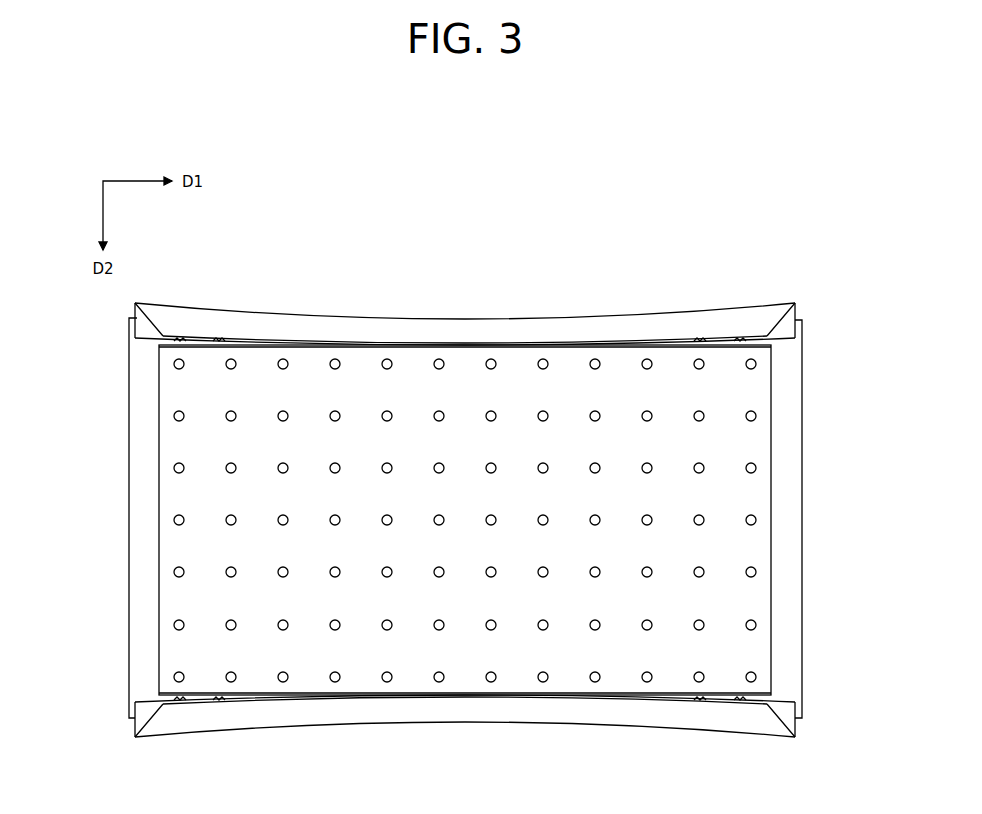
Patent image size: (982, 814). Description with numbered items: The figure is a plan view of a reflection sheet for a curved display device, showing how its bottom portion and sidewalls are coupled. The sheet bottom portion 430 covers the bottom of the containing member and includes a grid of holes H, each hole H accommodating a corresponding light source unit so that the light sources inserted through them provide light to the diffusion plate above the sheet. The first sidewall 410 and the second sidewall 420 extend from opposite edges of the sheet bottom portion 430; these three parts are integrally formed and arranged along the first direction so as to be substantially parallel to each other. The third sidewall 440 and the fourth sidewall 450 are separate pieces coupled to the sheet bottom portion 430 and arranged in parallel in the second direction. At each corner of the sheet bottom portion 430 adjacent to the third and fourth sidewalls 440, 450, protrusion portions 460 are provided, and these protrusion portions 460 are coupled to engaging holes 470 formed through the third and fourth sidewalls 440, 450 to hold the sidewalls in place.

The first sidewall 410 is at (790, 458).
The second sidewall 420 is at (143, 457).
The sheet bottom portion 430 is at (752, 492).
The third sidewall 440 is at (528, 328).
The fourth sidewall 450 is at (530, 712).
The protrusion portions 460 is at (180, 340).
The engaging holes 470 is at (218, 340).
The hole H is at (756, 415).